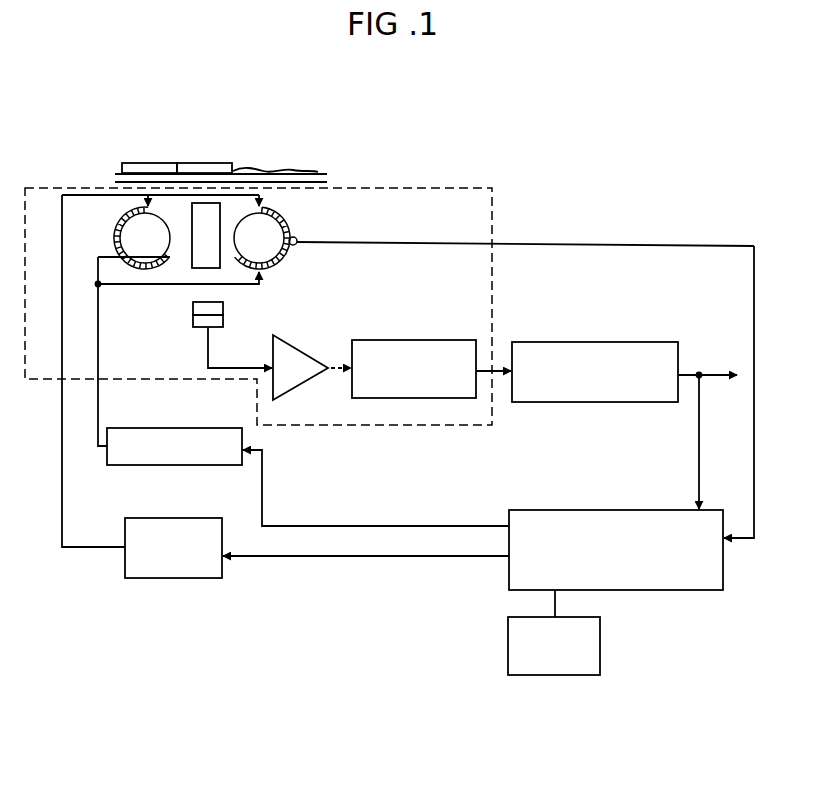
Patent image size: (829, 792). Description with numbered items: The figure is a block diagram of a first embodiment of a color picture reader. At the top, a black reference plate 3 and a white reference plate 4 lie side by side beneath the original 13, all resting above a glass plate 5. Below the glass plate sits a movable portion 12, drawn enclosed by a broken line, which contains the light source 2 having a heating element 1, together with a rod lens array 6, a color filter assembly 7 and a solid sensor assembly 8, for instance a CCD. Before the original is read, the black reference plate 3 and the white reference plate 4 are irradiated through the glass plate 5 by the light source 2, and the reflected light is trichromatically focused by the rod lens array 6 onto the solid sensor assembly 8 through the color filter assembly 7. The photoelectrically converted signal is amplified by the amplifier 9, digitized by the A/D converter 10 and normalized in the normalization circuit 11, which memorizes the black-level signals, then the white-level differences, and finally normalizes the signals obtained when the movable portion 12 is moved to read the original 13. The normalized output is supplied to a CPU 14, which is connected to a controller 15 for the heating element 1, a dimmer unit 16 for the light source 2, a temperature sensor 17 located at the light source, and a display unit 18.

The heating element 1 is at (116, 232).
The light source 2 is at (142, 206).
The black reference plate 3 is at (146, 163).
The white reference plate 4 is at (209, 163).
The glass plate 5 is at (327, 182).
The rod lens array 6 is at (220, 263).
The color filter assembly 7 is at (193, 310).
The solid sensor assembly 8 is at (193, 323).
The amplifier 9 is at (302, 348).
The A/D converter 10 is at (426, 340).
The normalization circuit 11 is at (622, 342).
The movable portion 12 is at (492, 226).
The original 13 is at (286, 170).
The CPU 14 is at (648, 510).
The controller 15 is at (203, 428).
The dimmer unit 16 is at (192, 518).
The temperature sensor 17 is at (300, 240).
The display unit 18 is at (600, 647).